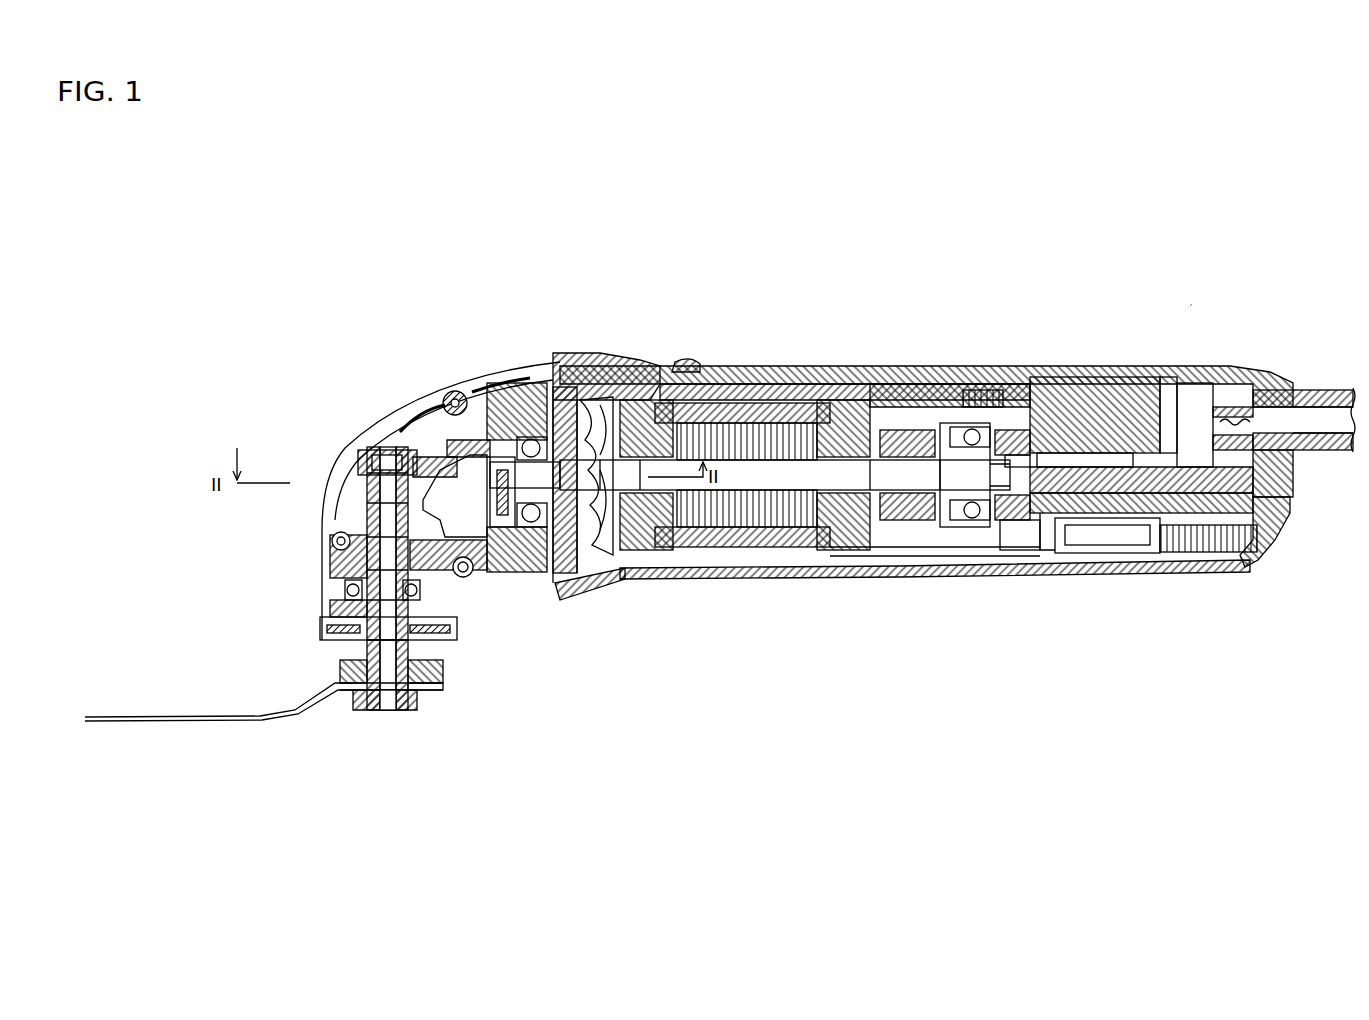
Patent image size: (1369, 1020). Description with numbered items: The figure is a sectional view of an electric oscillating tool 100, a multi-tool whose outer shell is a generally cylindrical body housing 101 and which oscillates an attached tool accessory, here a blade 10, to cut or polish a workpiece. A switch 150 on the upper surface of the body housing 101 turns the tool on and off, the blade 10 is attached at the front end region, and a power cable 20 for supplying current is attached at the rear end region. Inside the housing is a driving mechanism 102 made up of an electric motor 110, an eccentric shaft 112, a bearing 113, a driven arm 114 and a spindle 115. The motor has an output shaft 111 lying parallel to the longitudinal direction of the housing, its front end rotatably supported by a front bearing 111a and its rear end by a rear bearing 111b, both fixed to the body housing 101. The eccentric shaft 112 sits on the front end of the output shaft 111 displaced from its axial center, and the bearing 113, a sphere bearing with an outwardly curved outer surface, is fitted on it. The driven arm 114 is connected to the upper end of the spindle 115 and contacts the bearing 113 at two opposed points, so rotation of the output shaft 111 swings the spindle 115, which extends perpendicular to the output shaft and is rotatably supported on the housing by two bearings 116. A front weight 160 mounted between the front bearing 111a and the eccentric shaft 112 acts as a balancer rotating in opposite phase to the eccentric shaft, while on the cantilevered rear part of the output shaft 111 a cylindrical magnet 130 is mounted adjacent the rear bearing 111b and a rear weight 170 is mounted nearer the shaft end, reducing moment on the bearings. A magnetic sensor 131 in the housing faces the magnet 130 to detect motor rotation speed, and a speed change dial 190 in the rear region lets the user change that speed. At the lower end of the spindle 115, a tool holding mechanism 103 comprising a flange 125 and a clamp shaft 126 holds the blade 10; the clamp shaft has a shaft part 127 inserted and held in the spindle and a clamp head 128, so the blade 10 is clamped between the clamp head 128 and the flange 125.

The electric oscillating tool 100 is at (1193, 306).
The power cable 20 is at (1322, 388).
The body housing 101 is at (1038, 368).
The driving mechanism 102 is at (388, 436).
The tool holding mechanism 103 is at (325, 672).
The electric motor 110 is at (742, 405).
The output shaft 111 is at (625, 480).
The front bearing 111a is at (546, 462).
The rear bearing 111b is at (965, 540).
The eccentric shaft 112 is at (497, 560).
The bearing 113 is at (497, 435).
The driven arm 114 is at (430, 505).
The spindle 115 is at (375, 563).
The bearings 116 is at (365, 468).
The flange 125 is at (432, 672).
The clamp shaft 126 is at (350, 713).
The shaft part 127 is at (386, 665).
The clamp head 128 is at (418, 705).
The magnet 130 is at (1003, 400).
The magnetic sensor 131 is at (1005, 545).
The switch 150 is at (672, 362).
The front weight 160 is at (525, 418).
The rear weight 170 is at (1015, 558).
The speed change dial 190 is at (1265, 540).
The blade 10 is at (155, 716).